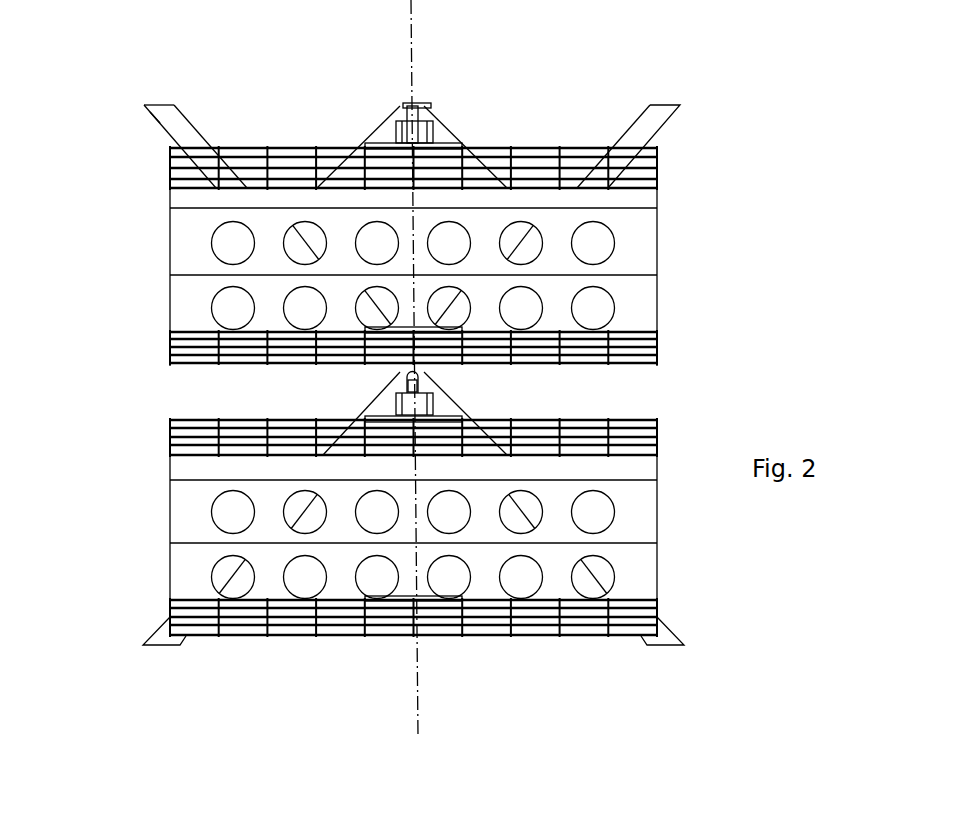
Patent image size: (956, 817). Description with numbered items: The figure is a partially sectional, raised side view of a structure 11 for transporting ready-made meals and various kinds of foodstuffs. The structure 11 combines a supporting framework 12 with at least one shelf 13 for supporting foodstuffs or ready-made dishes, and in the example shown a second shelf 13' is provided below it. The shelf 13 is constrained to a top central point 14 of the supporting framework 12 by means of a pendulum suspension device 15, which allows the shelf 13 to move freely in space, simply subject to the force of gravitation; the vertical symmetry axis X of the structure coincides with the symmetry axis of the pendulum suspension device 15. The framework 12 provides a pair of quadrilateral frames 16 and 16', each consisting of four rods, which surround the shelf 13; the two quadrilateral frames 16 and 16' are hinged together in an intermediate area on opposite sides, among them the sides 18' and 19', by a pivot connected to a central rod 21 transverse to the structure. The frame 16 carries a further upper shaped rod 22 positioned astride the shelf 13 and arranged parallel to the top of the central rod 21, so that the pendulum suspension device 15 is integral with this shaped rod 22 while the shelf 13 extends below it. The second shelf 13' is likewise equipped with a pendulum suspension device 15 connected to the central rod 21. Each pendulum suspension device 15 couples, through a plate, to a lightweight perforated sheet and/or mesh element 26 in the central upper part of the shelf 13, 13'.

The structure 11 is at (704, 302).
The supporting framework 12 is at (671, 130).
The shelf 13 is at (367, 269).
The second shelf 13' is at (368, 539).
The top central point 14 is at (414, 100).
The pendulum suspension device 15 is at (433, 130).
The quadrilateral frame 16 is at (207, 121).
The quadrilateral frame 16' is at (681, 121).
The side 18' is at (124, 105).
The side 19' is at (663, 169).
The central rod 21 is at (401, 378).
The upper shaped rod 22 is at (402, 105).
The perforated sheet and/or mesh element 26 is at (544, 147).
The symmetry axis X is at (406, 40).